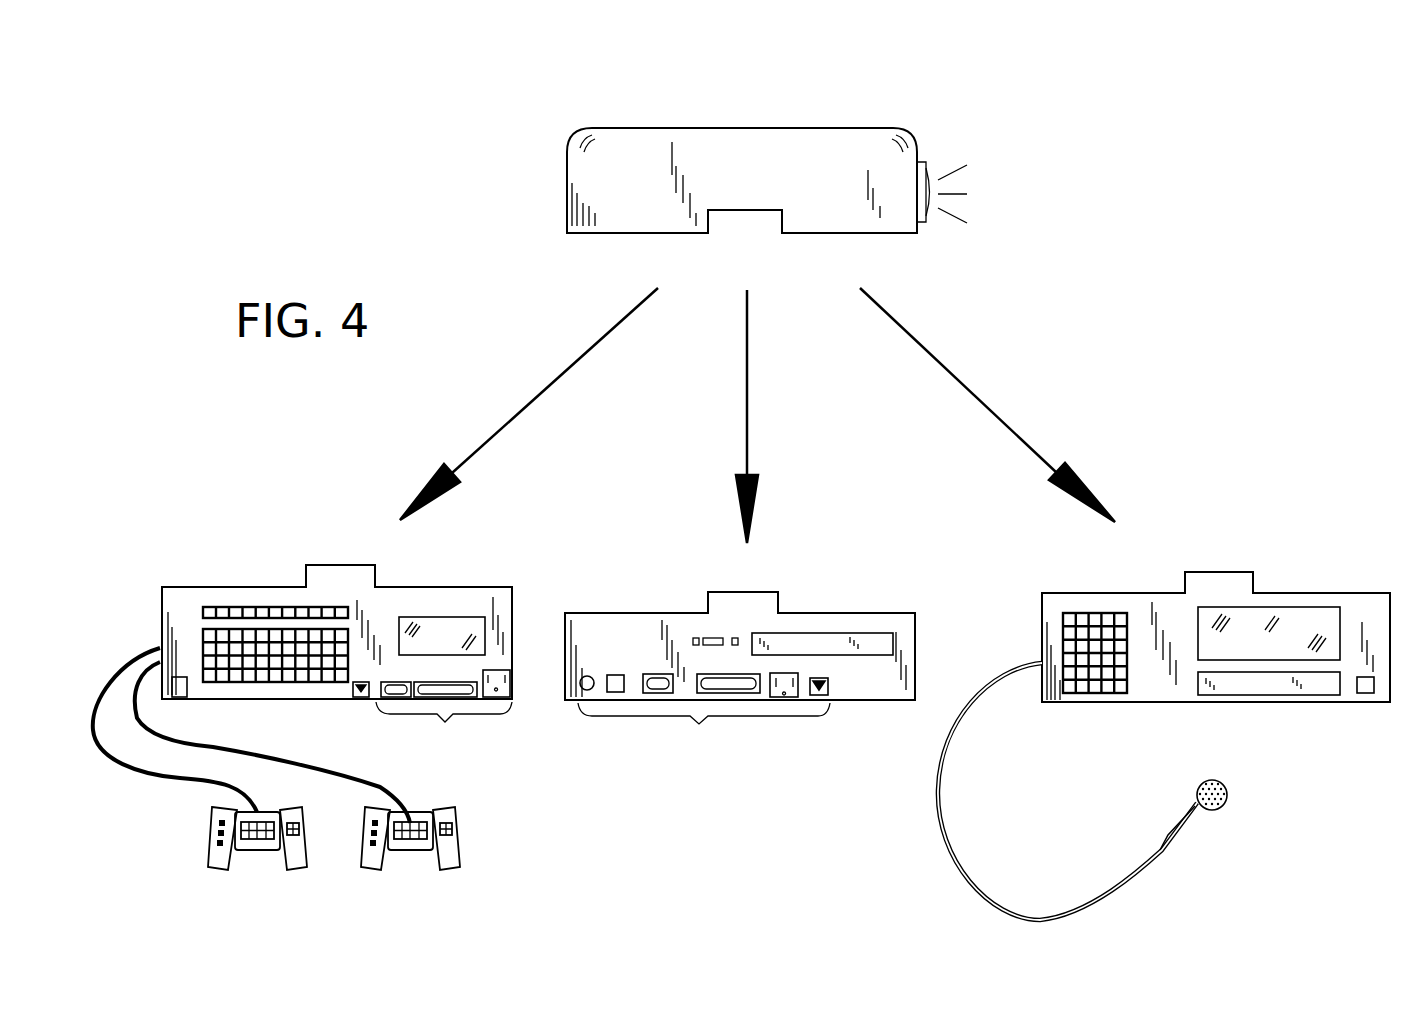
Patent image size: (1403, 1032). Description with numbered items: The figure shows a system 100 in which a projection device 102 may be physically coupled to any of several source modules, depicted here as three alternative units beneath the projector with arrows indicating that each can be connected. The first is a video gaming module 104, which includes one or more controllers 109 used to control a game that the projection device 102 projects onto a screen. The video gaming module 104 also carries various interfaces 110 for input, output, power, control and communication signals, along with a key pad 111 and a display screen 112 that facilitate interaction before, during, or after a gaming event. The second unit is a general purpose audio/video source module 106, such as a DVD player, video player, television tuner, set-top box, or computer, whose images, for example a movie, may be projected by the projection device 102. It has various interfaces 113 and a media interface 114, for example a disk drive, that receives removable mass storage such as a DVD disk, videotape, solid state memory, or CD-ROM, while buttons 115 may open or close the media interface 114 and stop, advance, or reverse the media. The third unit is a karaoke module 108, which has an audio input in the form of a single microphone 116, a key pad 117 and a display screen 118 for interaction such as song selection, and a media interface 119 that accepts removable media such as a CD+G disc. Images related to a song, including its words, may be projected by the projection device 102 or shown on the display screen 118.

The system 100 is at (1172, 174).
The projection device 102 is at (742, 130).
The video gaming module 104 is at (355, 612).
The general purpose audio/video source module 106 is at (769, 632).
The karaoke module 108 is at (1222, 624).
The controllers 109 is at (209, 838).
The interfaces 110 is at (342, 714).
The key pad 111 is at (260, 633).
The display screen 112 is at (443, 633).
The interfaces 113 is at (704, 731).
The media interface 114 is at (857, 643).
The buttons 115 is at (718, 637).
The microphone 116 is at (1188, 822).
The key pad 117 is at (1095, 620).
The display screen 118 is at (1332, 615).
The media interface 119 is at (1277, 688).